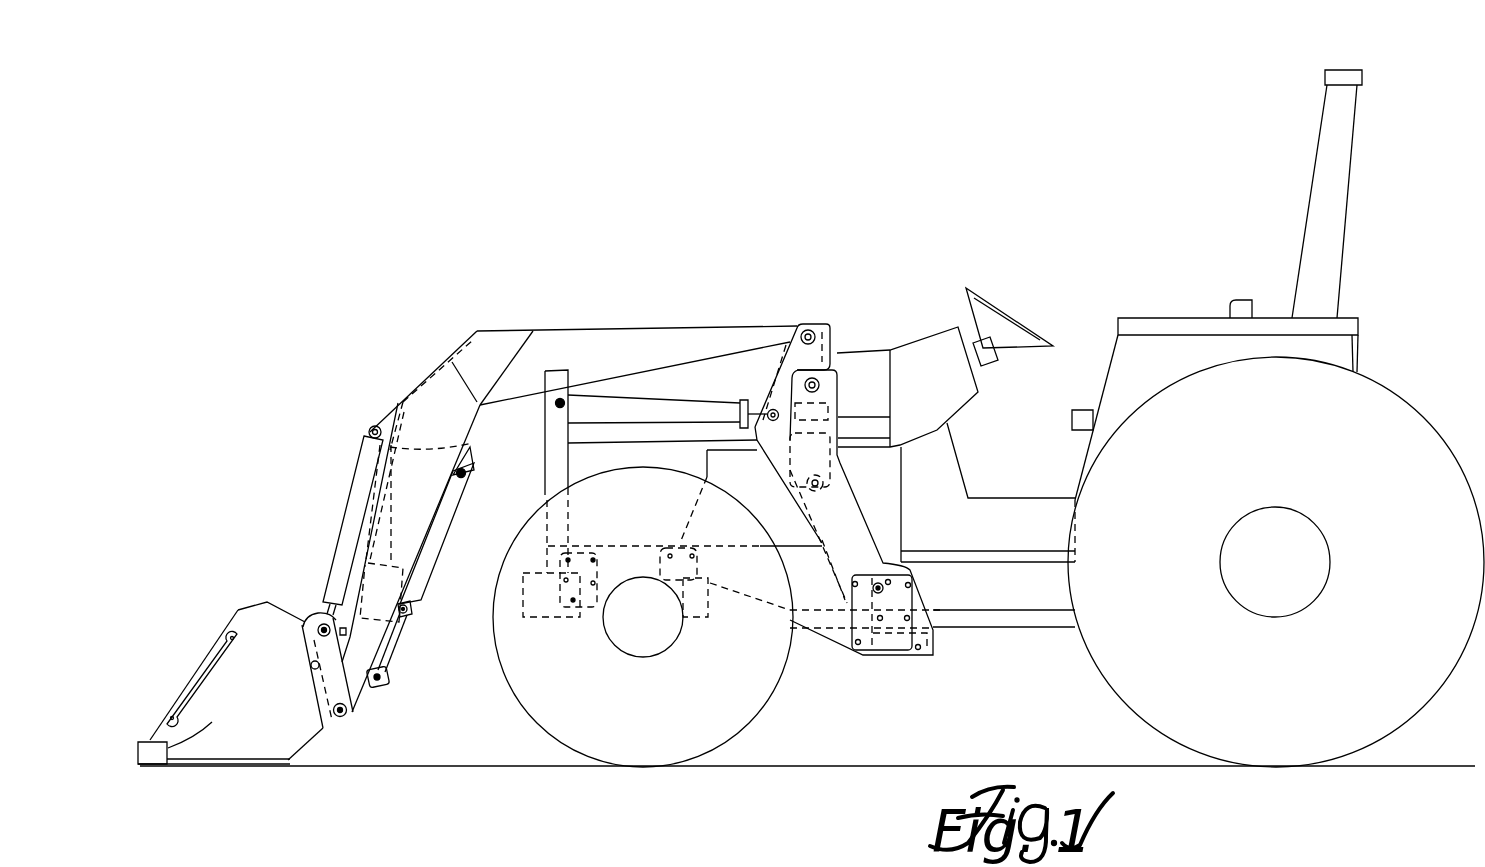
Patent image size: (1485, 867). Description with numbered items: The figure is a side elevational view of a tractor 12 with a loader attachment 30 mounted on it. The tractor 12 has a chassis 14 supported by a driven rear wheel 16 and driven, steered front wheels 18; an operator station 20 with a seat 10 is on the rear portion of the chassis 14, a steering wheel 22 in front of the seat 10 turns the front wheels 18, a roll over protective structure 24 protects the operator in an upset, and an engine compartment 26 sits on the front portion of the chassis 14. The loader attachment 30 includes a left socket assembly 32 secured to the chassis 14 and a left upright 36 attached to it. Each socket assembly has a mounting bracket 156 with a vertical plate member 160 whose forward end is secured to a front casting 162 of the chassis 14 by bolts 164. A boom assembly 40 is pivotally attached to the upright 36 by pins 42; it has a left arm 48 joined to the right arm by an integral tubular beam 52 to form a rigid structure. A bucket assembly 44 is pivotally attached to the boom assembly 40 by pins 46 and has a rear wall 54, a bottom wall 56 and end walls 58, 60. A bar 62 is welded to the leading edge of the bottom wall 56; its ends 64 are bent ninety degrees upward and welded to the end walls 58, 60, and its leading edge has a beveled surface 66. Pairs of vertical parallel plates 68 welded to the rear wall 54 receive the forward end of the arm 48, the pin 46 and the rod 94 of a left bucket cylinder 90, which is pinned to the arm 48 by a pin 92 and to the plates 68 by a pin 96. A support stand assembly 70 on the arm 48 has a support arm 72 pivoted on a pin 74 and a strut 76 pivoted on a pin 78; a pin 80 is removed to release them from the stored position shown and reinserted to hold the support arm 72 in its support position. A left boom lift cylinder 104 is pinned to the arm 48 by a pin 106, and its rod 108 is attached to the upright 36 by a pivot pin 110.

The seat 10 is at (1073, 413).
The tractor 12 is at (1380, 329).
The chassis 14 is at (1017, 598).
The rear wheel 16 is at (1420, 683).
The front wheels 18 is at (570, 733).
The operator station 20 is at (1018, 497).
The steering wheel 22 is at (1012, 313).
The roll over protective structure 24 is at (1325, 78).
The engine compartment 26 is at (693, 380).
The loader attachment 30 is at (413, 370).
The left socket assembly 32 is at (872, 533).
The left upright 36 is at (835, 340).
The boom assembly 40 is at (603, 330).
The pins 42 is at (808, 330).
The bucket assembly 44 is at (273, 747).
The pins 46 is at (352, 716).
The left arm 48 is at (495, 333).
The integral tubular beam 52 is at (388, 517).
The rear wall 54 is at (311, 667).
The bottom wall 56 is at (233, 763).
The end wall 58 is at (220, 687).
The end wall 60 is at (172, 707).
The bar 62 is at (160, 765).
The ends 64 is at (202, 724).
The beveled surface 66 is at (140, 765).
The vertical parallel plates 68 is at (326, 685).
The support stand assembly 70 is at (403, 650).
The support arm 72 is at (373, 677).
The pin 74 is at (375, 683).
The strut 76 is at (445, 517).
The pin 78 is at (408, 613).
The pin 80 is at (465, 477).
The left bucket cylinder 90 is at (357, 480).
The pin 92 is at (369, 430).
The rod 94 is at (322, 613).
The pin 96 is at (318, 632).
The left boom lift cylinder 104 is at (640, 398).
The pin 106 is at (558, 408).
The rod 108 is at (767, 405).
The pivot pin 110 is at (765, 440).
The mounting bracket 156 is at (823, 617).
The vertical plate member 160 is at (765, 580).
The front casting 162 is at (636, 555).
The bolts 164 is at (684, 542).